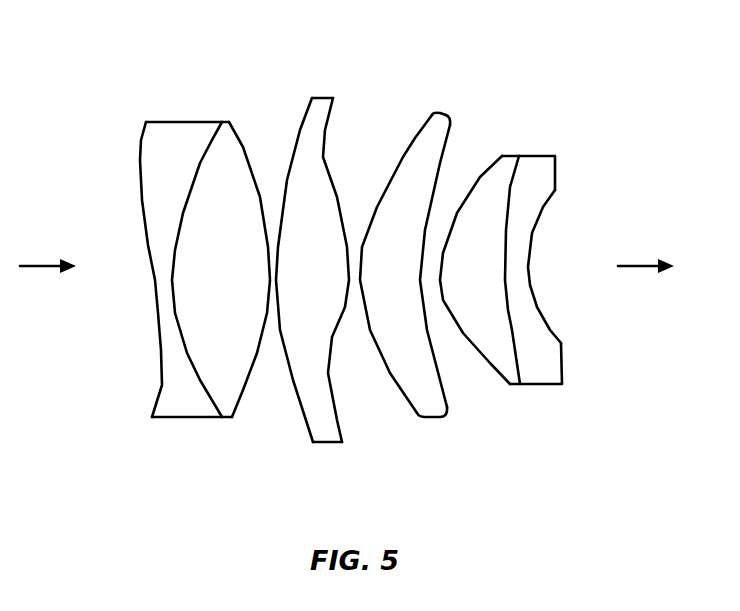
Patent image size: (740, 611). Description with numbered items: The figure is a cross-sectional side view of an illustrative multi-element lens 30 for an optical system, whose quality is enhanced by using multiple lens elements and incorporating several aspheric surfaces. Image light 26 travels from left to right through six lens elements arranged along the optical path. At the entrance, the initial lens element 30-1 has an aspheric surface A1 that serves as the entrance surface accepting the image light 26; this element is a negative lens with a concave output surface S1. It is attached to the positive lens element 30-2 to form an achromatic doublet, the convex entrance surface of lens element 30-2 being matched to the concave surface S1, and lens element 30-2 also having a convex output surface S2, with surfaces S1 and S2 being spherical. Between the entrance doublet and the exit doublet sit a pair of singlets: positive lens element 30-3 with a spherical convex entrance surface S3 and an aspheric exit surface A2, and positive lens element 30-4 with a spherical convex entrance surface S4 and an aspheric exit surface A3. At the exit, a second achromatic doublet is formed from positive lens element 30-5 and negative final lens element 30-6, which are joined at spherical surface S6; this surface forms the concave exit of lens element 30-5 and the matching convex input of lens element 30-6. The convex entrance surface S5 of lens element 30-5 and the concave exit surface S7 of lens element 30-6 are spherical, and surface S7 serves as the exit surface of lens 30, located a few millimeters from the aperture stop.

The lens 30 is at (565, 53).
The image light 26 is at (33, 263).
The lens element 30-1 is at (173, 410).
The positive lens element 30-2 is at (240, 387).
The lens element 30-3 is at (327, 433).
The lens element 30-4 is at (408, 387).
The lens element 30-5 is at (505, 370).
The final lens element 30-6 is at (562, 365).
The aspheric surface A1 is at (140, 147).
The aspheric exit surface A2 is at (332, 113).
The aspheric exit surface A3 is at (448, 137).
The concave output surface S1 is at (210, 140).
The output surface S2 is at (243, 147).
The spherical convex entrance surface S3 is at (300, 128).
The spherical convex entrance surface S4 is at (420, 116).
The convex entrance surface S5 is at (480, 170).
The surface S6 is at (518, 180).
The concave exit surface S7 is at (536, 228).